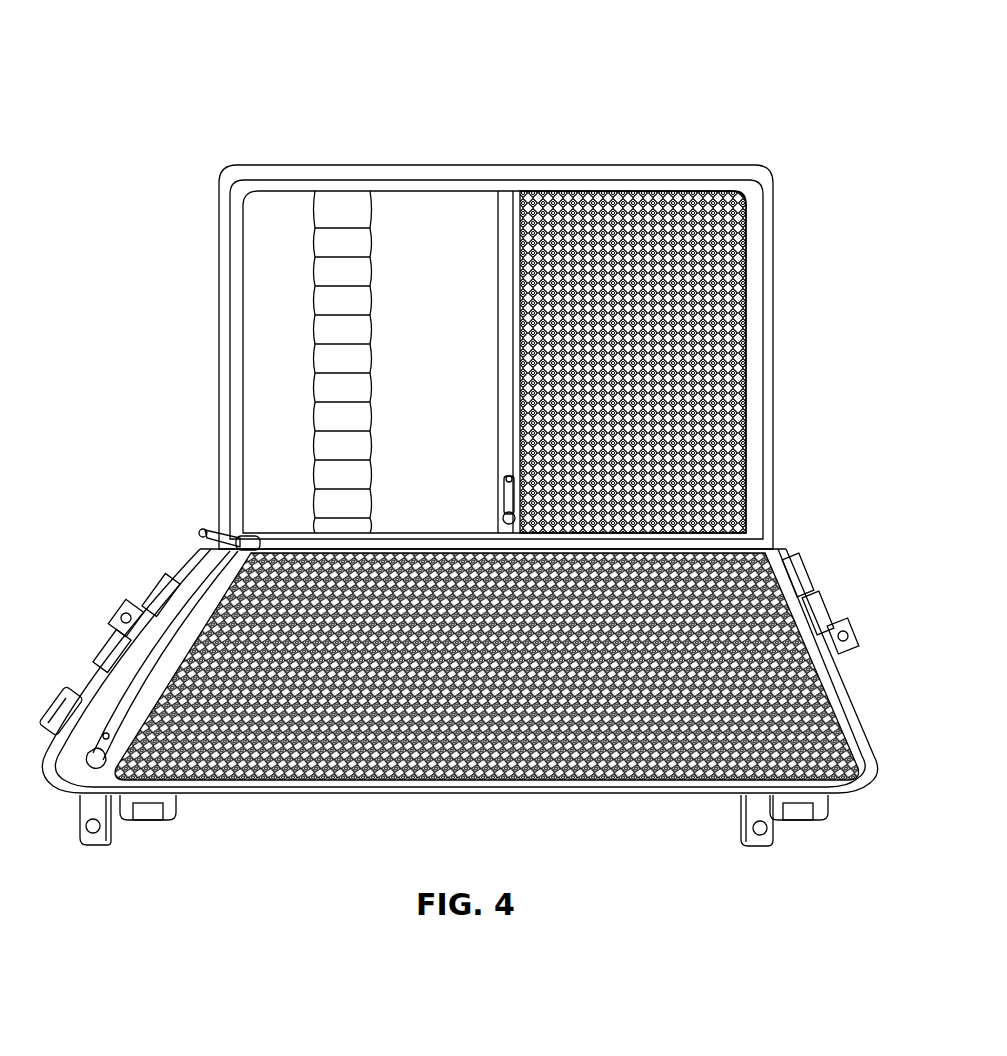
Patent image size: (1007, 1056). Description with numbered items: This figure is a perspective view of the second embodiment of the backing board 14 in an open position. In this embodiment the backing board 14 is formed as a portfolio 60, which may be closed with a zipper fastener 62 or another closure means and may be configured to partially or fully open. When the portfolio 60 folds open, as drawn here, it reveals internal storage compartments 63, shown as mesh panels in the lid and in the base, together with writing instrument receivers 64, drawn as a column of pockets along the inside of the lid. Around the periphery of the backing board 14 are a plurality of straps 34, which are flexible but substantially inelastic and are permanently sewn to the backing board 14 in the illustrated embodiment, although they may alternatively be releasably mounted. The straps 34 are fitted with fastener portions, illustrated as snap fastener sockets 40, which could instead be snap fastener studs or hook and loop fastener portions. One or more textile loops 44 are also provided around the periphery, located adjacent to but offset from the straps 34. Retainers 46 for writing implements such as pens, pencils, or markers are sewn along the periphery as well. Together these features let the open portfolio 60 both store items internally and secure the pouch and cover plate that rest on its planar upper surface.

The backing board 14 is at (127, 63).
The portfolio 60 is at (212, 296).
The zipper fastener 62 is at (195, 524).
The internal storage compartments 63 is at (610, 205).
The writing instrument receivers 64 is at (350, 232).
The retainers 46 is at (58, 700).
The textile loops 44 is at (150, 800).
The straps 34 is at (90, 826).
The snap fastener sockets 40 is at (755, 822).